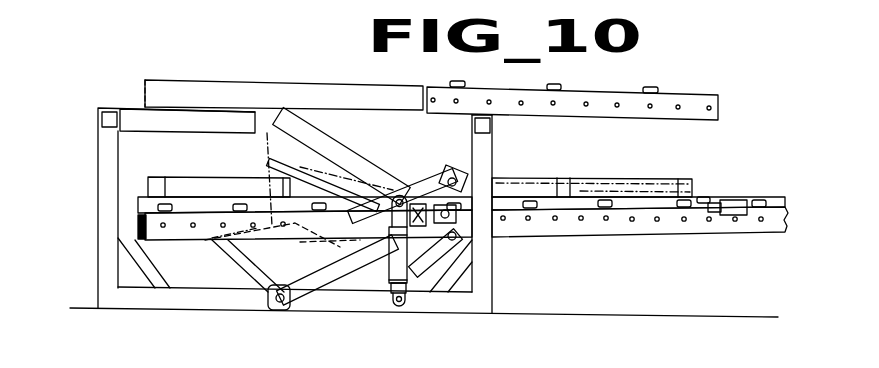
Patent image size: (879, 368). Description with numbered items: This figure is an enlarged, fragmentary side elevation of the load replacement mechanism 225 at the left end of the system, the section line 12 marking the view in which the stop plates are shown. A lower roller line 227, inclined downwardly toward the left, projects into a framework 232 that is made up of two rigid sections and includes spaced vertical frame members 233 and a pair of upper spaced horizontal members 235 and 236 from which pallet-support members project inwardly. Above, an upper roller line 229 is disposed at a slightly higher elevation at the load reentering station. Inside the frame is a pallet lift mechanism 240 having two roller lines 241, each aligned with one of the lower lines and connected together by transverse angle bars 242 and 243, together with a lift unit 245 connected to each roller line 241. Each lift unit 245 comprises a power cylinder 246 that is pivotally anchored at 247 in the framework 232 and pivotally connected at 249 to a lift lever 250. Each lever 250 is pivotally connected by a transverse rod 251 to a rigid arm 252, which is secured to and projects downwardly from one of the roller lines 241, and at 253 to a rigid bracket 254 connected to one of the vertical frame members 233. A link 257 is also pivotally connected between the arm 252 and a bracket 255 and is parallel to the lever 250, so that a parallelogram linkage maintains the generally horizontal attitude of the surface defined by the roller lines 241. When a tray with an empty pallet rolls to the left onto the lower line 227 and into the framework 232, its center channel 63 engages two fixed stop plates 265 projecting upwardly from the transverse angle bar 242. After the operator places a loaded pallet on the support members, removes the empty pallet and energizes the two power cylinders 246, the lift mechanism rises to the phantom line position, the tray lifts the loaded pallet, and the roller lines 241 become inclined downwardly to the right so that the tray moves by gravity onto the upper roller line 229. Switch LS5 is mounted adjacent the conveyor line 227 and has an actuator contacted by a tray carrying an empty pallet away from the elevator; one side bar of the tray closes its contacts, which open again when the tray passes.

The section line 12- 12 is at (259, 66).
The load replacement mechanism 225 is at (100, 88).
The upper horizontal member 235 is at (101, 118).
The vertical frame member 233 is at (98, 178).
The framework 232 is at (496, 152).
The upper horizontal member 236 is at (492, 127).
The upper roller line 229 is at (692, 95).
The center channel 63 is at (267, 181).
The roller line 241 is at (145, 211).
The pallet lift mechanism 240 is at (134, 229).
The lower roller line 227 is at (693, 229).
The switch LS-5 LS5 is at (733, 199).
The lift lever 250 is at (372, 200).
The pivotal connection 253 is at (452, 177).
The rigid bracket 254 is at (496, 172).
The pivotal connection 249 is at (398, 195).
The lift unit 245 is at (382, 272).
The power cylinder 246 is at (413, 291).
The pivotal anchor 247 is at (401, 305).
The link 257 is at (313, 299).
The rigid arm 252 is at (266, 296).
The transverse rod 251 is at (262, 267).
The bracket 255 is at (466, 238).
The transverse angle bar 242 is at (222, 255).
The fixed stop plate 265 is at (212, 239).
The transverse angle bar 243 is at (300, 236).